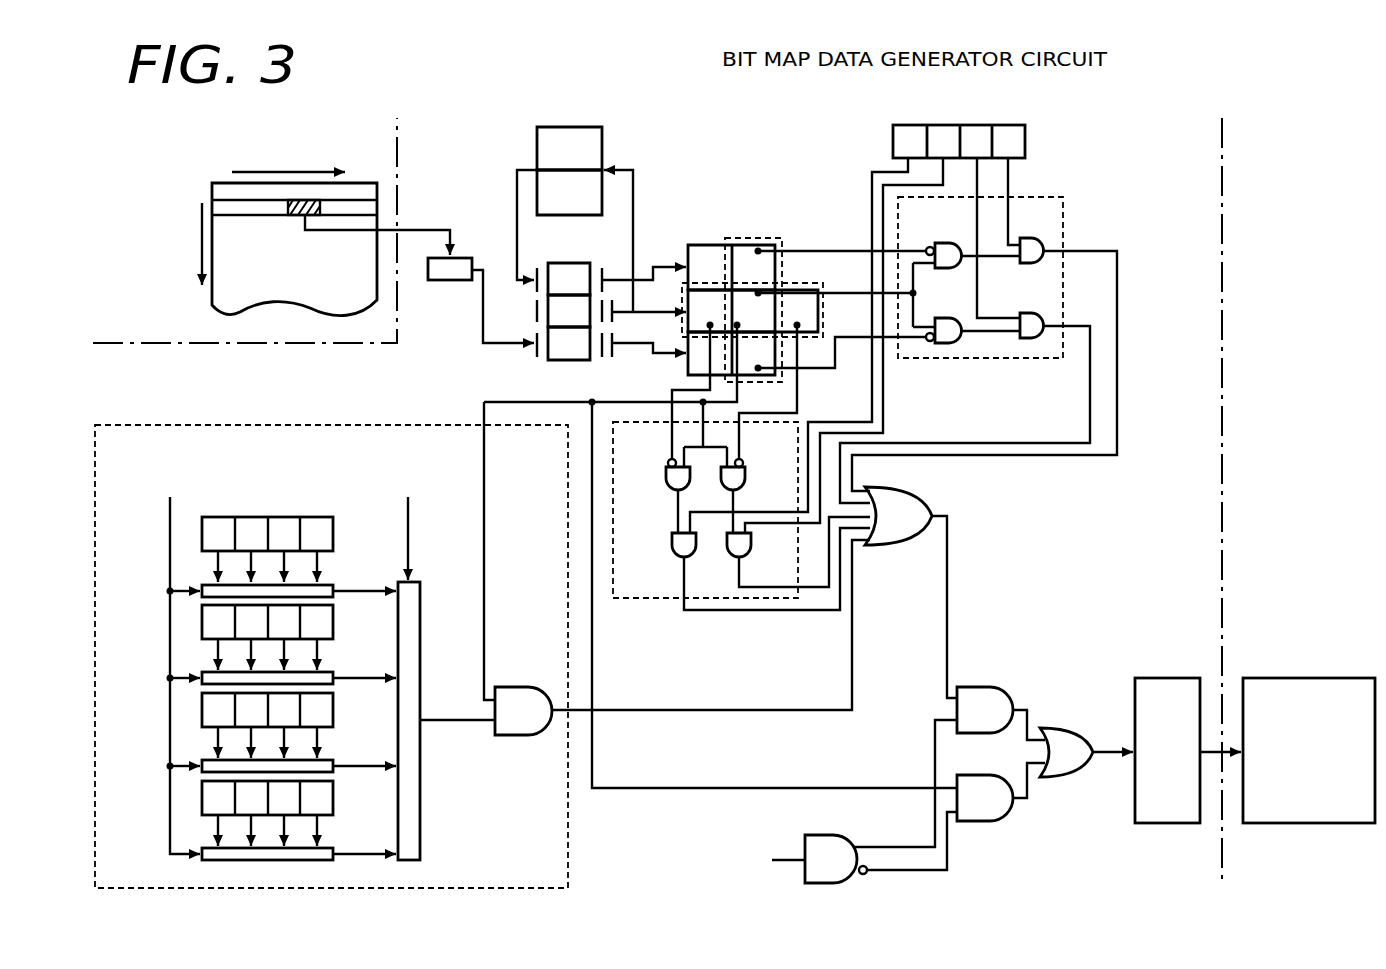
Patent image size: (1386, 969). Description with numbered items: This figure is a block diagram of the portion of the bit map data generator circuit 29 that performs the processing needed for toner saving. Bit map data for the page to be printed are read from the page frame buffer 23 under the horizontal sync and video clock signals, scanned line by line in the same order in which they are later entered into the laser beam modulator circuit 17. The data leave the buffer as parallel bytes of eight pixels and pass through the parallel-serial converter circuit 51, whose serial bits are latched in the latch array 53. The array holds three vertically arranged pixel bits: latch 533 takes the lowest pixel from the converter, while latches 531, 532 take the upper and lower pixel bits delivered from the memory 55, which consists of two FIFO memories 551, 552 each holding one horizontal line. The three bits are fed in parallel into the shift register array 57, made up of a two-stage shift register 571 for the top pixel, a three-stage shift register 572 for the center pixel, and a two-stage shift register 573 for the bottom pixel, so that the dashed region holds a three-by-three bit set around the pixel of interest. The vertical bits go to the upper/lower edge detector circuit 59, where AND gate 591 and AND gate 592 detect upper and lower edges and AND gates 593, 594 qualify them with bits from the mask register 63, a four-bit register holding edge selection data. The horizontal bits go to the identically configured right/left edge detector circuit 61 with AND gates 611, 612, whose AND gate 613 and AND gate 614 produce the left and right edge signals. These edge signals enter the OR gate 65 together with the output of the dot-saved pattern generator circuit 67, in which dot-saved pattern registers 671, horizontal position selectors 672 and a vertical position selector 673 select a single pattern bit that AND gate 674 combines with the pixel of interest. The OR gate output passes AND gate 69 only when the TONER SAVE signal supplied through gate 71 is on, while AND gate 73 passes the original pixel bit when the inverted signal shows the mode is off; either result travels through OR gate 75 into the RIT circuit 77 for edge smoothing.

The laser beam modulator circuit 17 is at (1336, 678).
The page frame buffer 23 is at (223, 183).
The bit map data generator circuit 29 is at (796, 158).
The parallel-serial converter circuit 51 is at (458, 260).
The latch array 53 is at (575, 263).
The latch 531 is at (560, 276).
The latch 532 is at (558, 310).
The latch 533 is at (560, 358).
The memory 55 is at (563, 127).
The FIFO memory 551 is at (545, 152).
The FIFO memory 552 is at (545, 190).
The shift register array 57 is at (712, 243).
The shift register 571 is at (690, 262).
The shift register 572 is at (690, 300).
The shift register 573 is at (690, 360).
The upper/lower edge detector circuit 59 is at (1030, 196).
The AND gate 591 is at (952, 235).
The AND gate 592 is at (952, 313).
The AND gate 593 is at (1032, 239).
The AND gate 594 is at (1032, 316).
The right/left edge detector circuit 61 is at (799, 421).
The AND gate 611 is at (668, 480).
The AND gate 612 is at (748, 480).
The AND gate 613 is at (670, 556).
The AND gate 614 is at (752, 556).
The mask register 63 is at (1025, 138).
The OR gate 65 is at (910, 489).
The dot-saved pattern generator circuit 67 is at (406, 424).
The dot-saved pattern registers 671 is at (334, 536).
The horizontal position selectors 672 is at (334, 586).
The vertical position selector 673 is at (424, 606).
The AND gate 674 is at (523, 675).
The AND gate 69 is at (986, 688).
The gate 71 is at (836, 835).
The AND gate 73 is at (986, 776).
The OR gate 75 is at (1074, 732).
The RIT circuit 77 is at (1170, 678).